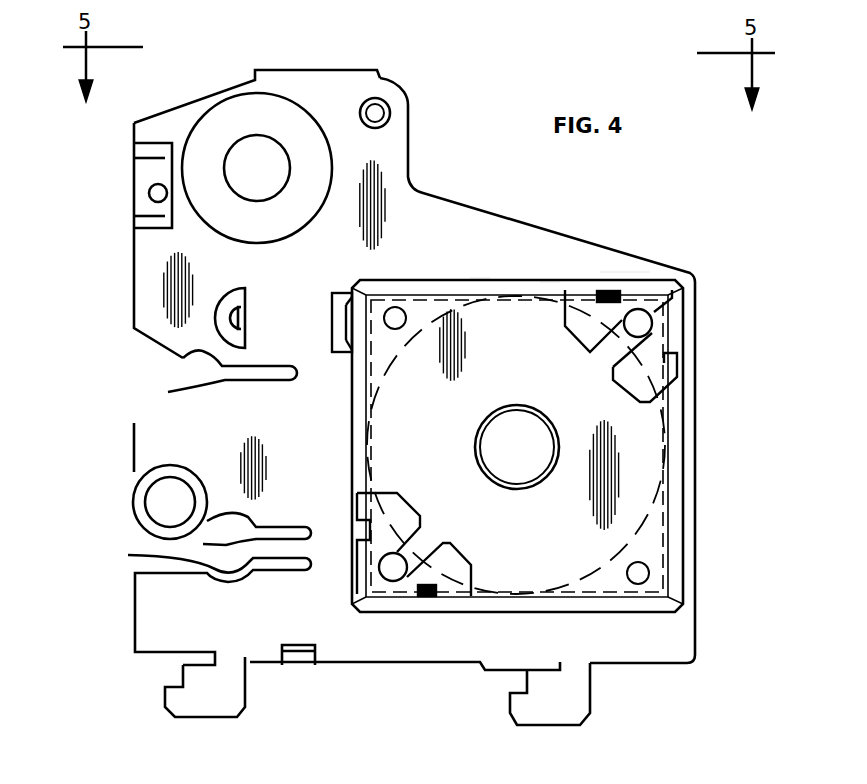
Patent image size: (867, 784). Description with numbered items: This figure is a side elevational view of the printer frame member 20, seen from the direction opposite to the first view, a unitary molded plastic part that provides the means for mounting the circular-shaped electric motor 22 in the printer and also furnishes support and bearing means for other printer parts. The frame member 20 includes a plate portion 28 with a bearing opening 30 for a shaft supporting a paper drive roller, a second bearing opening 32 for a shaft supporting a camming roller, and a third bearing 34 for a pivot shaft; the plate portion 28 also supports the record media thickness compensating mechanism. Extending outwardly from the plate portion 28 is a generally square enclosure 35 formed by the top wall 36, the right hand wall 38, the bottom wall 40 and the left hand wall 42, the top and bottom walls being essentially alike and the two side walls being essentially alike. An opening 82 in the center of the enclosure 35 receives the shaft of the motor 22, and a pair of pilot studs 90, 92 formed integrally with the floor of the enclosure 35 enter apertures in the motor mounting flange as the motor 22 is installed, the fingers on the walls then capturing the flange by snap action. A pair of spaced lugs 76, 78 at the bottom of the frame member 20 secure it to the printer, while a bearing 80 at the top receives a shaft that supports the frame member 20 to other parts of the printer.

The frame member 20 is at (508, 205).
The electric motor 22 is at (645, 527).
The plate portion 28 is at (577, 260).
The bearing opening 30 is at (205, 358).
The second bearing opening 32 is at (203, 563).
The third bearing 34 is at (188, 485).
The enclosure 35 is at (468, 268).
The top wall 36 is at (547, 286).
The right hand wall 38 is at (352, 428).
The bottom wall 40 is at (505, 613).
The left hand wall 42 is at (685, 484).
The lug 76 is at (232, 696).
The lug 78 is at (580, 698).
The bearing 80 is at (392, 118).
The opening 82 is at (542, 418).
The pilot stud 90 is at (650, 320).
The pilot stud 92 is at (407, 557).